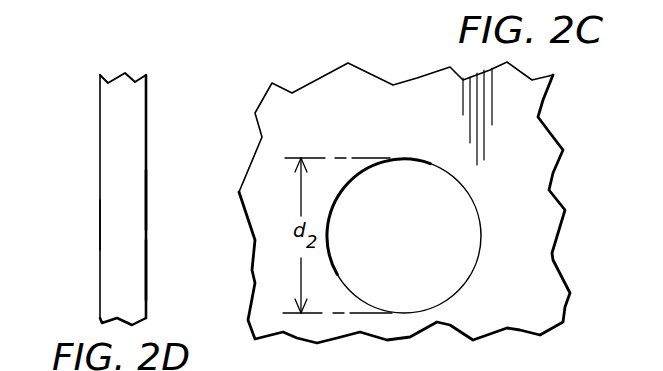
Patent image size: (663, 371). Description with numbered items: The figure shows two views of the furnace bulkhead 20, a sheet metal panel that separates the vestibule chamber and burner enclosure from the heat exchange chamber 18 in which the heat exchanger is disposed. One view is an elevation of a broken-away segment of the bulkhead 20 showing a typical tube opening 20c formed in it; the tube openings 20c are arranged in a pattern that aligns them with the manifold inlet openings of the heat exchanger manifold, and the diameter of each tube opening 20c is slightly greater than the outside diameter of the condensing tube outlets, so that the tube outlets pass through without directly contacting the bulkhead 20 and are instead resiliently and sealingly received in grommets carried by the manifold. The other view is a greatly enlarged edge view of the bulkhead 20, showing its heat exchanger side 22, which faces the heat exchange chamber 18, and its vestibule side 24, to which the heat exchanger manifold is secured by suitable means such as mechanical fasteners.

In FIG. 2C, the bulkhead 20 is at (423, 38).
In FIG. 2D, the bulkhead 20 is at (113, 146).
In FIG. 2C, the tube opening 20c is at (422, 252).
In FIG. 2D, the heat exchanger side 22 is at (147, 196).
In FIG. 2D, the vestibule side 24 is at (100, 225).
In FIG. 2D, the heat exchange chamber 18 is at (179, 253).